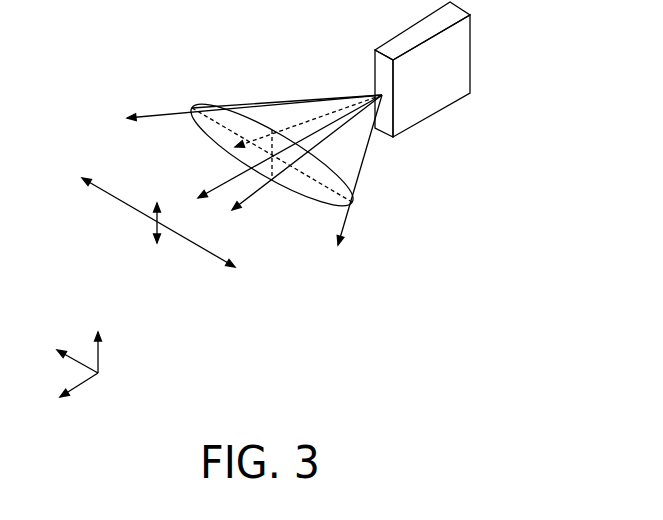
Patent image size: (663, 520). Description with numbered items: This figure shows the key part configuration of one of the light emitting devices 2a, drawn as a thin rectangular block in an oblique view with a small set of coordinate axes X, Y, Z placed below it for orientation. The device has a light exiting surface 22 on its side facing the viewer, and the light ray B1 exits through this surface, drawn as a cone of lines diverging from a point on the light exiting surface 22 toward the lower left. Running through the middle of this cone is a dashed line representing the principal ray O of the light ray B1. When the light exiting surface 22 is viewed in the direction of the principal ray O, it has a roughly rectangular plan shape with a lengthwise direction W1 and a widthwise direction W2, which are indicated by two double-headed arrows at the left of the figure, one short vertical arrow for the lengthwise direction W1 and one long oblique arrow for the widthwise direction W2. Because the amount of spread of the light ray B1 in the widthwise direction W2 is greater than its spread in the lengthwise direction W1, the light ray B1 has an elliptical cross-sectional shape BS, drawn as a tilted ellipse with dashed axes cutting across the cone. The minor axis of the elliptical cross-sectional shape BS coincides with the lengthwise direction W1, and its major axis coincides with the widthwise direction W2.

The light exiting surface 22 is at (387, 84).
The light emitting device 2a is at (445, 80).
The light ray B1 is at (304, 122).
The elliptical cross-sectional shape BS is at (322, 207).
The principal ray O is at (218, 188).
The lengthwise direction W1 is at (157, 240).
The widthwise direction W2 is at (173, 233).
The X axis X is at (70, 394).
The Y axis Y is at (69, 351).
The Z axis Z is at (99, 337).